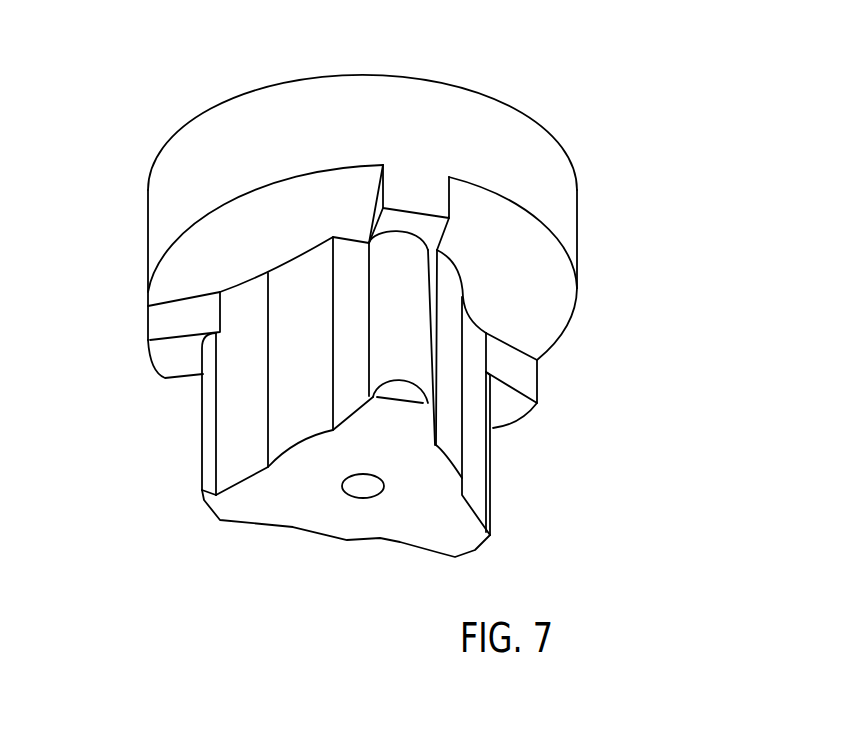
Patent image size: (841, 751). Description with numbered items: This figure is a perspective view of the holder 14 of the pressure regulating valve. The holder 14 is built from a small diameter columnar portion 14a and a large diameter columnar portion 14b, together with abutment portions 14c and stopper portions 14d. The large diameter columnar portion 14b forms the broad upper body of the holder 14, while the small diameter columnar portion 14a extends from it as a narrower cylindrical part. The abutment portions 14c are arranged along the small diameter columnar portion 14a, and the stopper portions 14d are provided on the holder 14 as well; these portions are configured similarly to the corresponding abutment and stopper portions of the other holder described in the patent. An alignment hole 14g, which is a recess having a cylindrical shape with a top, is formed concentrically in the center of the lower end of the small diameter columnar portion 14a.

The holder 14 is at (472, 84).
The small diameter columnar portion 14a is at (303, 272).
The large diameter columnar portion 14b is at (530, 150).
The abutment portions 14c is at (240, 422).
The stopper portions 14d is at (417, 190).
The alignment hole 14g is at (368, 482).